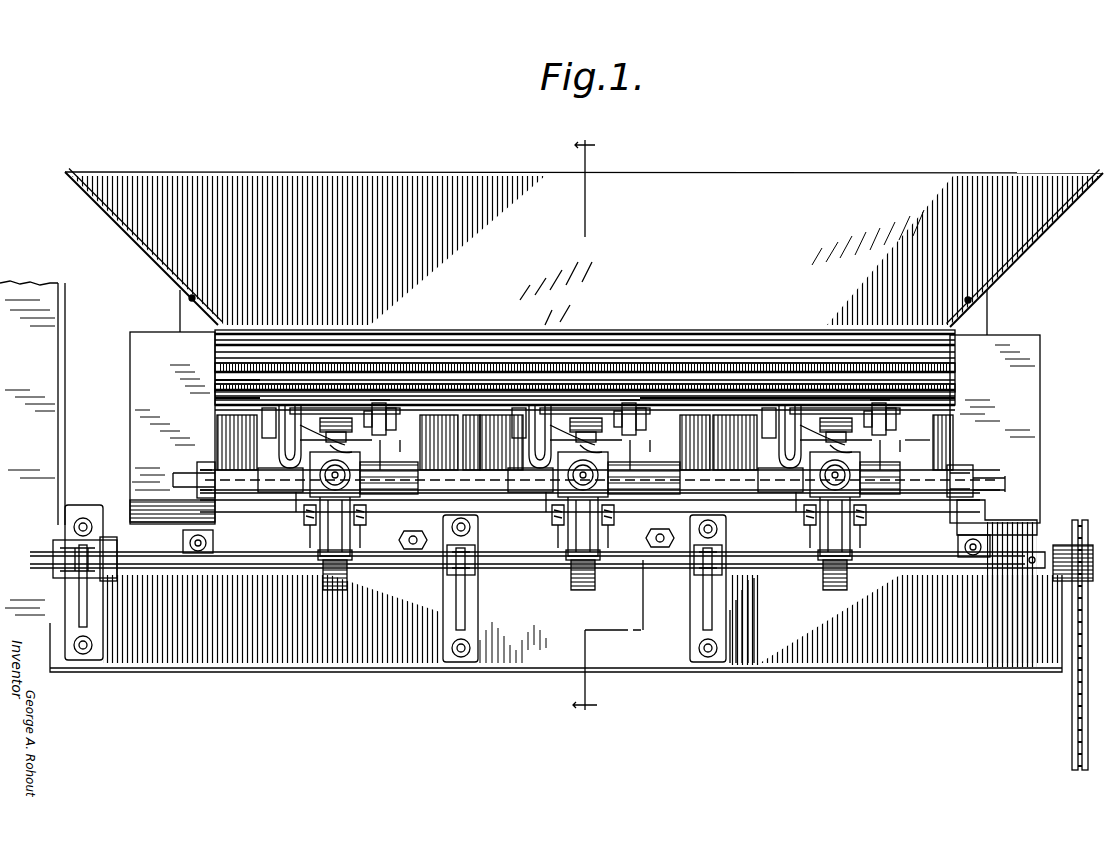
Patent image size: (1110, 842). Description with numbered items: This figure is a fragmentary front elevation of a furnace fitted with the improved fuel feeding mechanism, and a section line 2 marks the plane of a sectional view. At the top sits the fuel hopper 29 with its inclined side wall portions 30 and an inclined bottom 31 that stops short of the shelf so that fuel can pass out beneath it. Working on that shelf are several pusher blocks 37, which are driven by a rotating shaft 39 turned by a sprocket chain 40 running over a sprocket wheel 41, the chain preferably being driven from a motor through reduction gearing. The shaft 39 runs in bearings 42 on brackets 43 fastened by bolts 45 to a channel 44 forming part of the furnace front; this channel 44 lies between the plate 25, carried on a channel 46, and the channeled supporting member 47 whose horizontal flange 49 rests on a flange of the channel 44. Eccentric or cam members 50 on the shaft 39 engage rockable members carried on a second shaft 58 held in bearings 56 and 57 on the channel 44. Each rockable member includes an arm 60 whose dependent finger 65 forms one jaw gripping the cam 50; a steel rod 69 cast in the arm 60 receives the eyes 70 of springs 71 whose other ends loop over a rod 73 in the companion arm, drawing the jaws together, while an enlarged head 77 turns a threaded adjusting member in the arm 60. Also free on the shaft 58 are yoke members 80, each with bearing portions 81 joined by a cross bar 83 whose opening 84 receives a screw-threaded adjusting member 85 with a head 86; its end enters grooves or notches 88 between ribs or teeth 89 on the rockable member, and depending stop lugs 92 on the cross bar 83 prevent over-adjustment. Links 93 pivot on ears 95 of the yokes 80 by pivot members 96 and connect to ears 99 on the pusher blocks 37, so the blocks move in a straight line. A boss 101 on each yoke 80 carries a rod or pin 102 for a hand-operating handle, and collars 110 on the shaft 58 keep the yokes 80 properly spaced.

The section line 2- 2 is at (608, 425).
The plate 25 is at (232, 668).
The fuel hopper 29 is at (668, 200).
The inclined side wall portions 30 is at (140, 246).
The inclined bottom 31 is at (750, 345).
The pusher blocks 37 is at (482, 415).
The rotating shaft 39 is at (775, 572).
The sprocket chain 40 is at (1072, 630).
The sprocket wheel 41 is at (1079, 520).
The bearings 42 is at (62, 546).
The brackets 43 is at (98, 617).
The channel 44 is at (405, 668).
The bolts 45 is at (84, 516).
The channel 46 is at (574, 539).
The channeled supporting member 47 is at (200, 502).
The horizontal flange 49 is at (920, 517).
The eccentric or cam member 50 is at (338, 590).
The bearing 56 is at (197, 472).
The bearing 57 is at (600, 487).
The shaft 58 is at (230, 468).
The arm 60 is at (325, 525).
The dependent fingers 65 is at (326, 556).
The transversely extending steel rod 69 is at (806, 515).
The eyes 70 is at (601, 484).
The springs 71 is at (587, 556).
The rod 73 is at (585, 574).
The enlarged head 77 is at (646, 452).
The yoke members 80 is at (400, 410).
The bearing portions 81 is at (918, 500).
The cross bar 83 is at (300, 440).
The opening 84 is at (917, 432).
The screw-threaded adjusting member 85 is at (595, 411).
The head 86 is at (586, 417).
The grooves or notches 88 is at (572, 435).
The ribs or teeth 89 is at (592, 443).
The depending stop lugs 92 is at (630, 429).
The links 93 is at (378, 410).
The ears 95 is at (286, 406).
The pivot members 96 is at (540, 436).
The ears 99 is at (591, 443).
The enlargement or boss 101 is at (530, 476).
The rod or pin 102 is at (268, 475).
The collars 110 is at (962, 450).